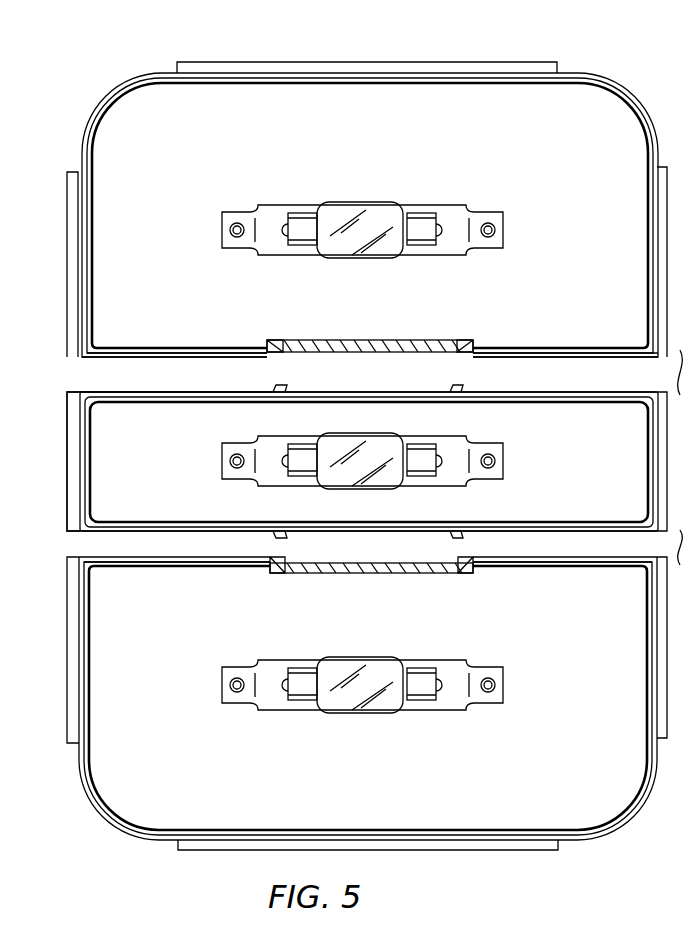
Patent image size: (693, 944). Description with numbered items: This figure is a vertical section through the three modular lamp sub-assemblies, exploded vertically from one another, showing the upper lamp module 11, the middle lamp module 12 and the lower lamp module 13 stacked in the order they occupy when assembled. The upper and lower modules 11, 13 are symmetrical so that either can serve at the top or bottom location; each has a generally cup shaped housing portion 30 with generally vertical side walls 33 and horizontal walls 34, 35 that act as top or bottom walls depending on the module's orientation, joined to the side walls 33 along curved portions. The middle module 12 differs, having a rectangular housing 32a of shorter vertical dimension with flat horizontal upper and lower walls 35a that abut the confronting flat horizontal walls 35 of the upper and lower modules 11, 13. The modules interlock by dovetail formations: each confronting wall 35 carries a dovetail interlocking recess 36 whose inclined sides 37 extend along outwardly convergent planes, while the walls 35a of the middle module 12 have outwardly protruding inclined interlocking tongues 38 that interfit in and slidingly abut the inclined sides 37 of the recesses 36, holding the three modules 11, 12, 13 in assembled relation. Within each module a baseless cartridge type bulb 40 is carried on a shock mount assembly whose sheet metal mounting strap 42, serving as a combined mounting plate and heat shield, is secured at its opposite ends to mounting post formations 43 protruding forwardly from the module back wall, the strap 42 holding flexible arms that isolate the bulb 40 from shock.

The upper lamp module 11 is at (93, 113).
The middle lamp module 12 is at (64, 479).
The lower lamp module 13 is at (68, 719).
The housing portion 30 is at (94, 361).
The housing of the middle module 32a is at (167, 392).
The side walls 33 is at (93, 232).
The horizontal wall 34 is at (507, 83).
The flat horizontal wall 35 is at (533, 347).
The flat horizontal upper and lower walls 35a is at (566, 392).
The dovetail interlocking recess 36 is at (360, 352).
The inclined sides 37 is at (280, 340).
The interlocking tongues 38 is at (273, 389).
The baseless cartridge type bulb 40 is at (370, 257).
The mounting strap 42 is at (449, 256).
The mounting post formations 43 is at (490, 238).